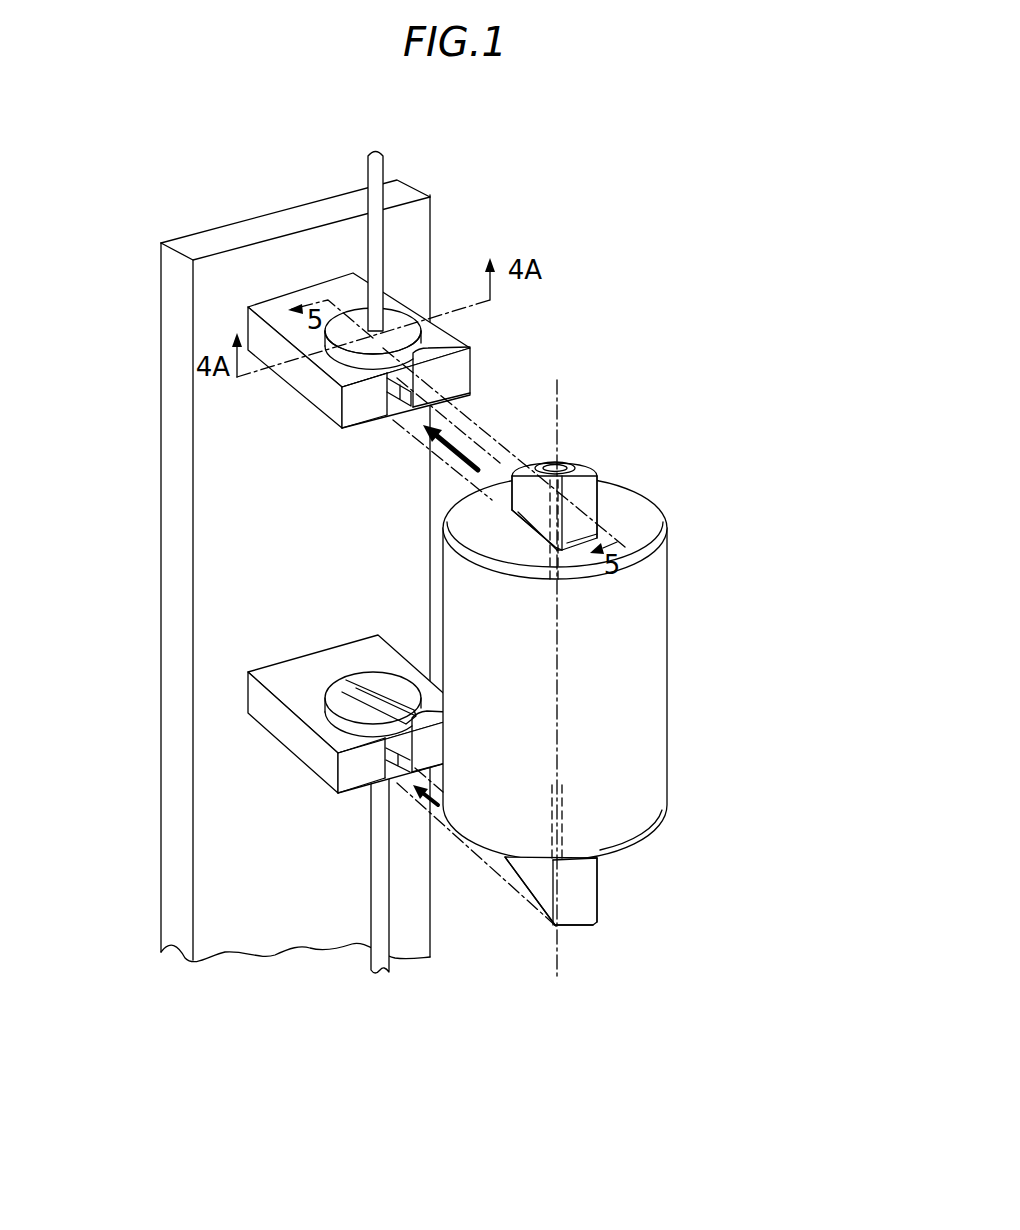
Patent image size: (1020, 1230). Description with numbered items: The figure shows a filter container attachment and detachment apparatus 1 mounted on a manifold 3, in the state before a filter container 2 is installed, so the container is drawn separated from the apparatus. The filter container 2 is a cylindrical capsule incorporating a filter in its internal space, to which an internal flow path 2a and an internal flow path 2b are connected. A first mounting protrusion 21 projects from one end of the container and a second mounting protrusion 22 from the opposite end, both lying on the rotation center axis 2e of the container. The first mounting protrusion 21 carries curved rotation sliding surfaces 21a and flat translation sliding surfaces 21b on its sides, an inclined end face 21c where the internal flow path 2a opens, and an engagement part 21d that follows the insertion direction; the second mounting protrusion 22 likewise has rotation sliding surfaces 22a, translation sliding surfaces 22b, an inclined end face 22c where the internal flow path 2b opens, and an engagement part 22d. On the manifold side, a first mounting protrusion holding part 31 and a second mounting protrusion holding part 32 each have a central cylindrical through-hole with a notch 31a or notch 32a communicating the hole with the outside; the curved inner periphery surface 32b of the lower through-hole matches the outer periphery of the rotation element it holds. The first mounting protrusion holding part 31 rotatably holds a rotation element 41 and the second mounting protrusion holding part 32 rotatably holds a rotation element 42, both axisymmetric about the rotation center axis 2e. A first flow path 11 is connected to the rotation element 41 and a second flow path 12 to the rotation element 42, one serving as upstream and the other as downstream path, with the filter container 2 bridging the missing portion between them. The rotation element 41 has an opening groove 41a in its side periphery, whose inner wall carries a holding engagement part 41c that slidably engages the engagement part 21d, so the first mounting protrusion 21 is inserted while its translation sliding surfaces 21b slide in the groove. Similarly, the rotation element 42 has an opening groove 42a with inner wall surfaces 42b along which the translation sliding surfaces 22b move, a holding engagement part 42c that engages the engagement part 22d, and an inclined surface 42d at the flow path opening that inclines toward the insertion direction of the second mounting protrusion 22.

The filter container attachment and detachment apparatus 1 is at (645, 270).
The filter container 2 is at (633, 698).
The internal flow path 2a is at (560, 575).
The internal flow path 2b is at (560, 825).
The rotation center axis 2e is at (560, 397).
The manifold 3 is at (245, 238).
The first flow path 11 is at (373, 195).
The second flow path 12 is at (378, 942).
The first mounting protrusion 21 is at (625, 443).
The rotation sliding surfaces 21a is at (514, 470).
The translation sliding surfaces 21b is at (597, 492).
The end face 21c is at (590, 470).
The engagement part 21d is at (565, 541).
The second mounting protrusion 22 is at (585, 885).
The rotation sliding surfaces 22a is at (597, 877).
The translation sliding surfaces 22b is at (533, 883).
The end face 22c is at (575, 930).
The engagement part 22d is at (597, 860).
The first mounting protrusion holding part 31 is at (460, 368).
The notch 31a is at (420, 379).
The second mounting protrusion holding part 32 is at (332, 672).
The notch 32a is at (403, 784).
The inner periphery surface 32b is at (400, 628).
The rotation element 41 is at (397, 320).
The opening groove 41a is at (417, 381).
The holding engagement part 41c is at (382, 423).
The rotation element 42 is at (350, 708).
The opening groove 42a is at (393, 792).
The inner wall surfaces 42b is at (398, 780).
The holding engagement part 42c is at (350, 695).
The inclined surface 42d is at (345, 727).